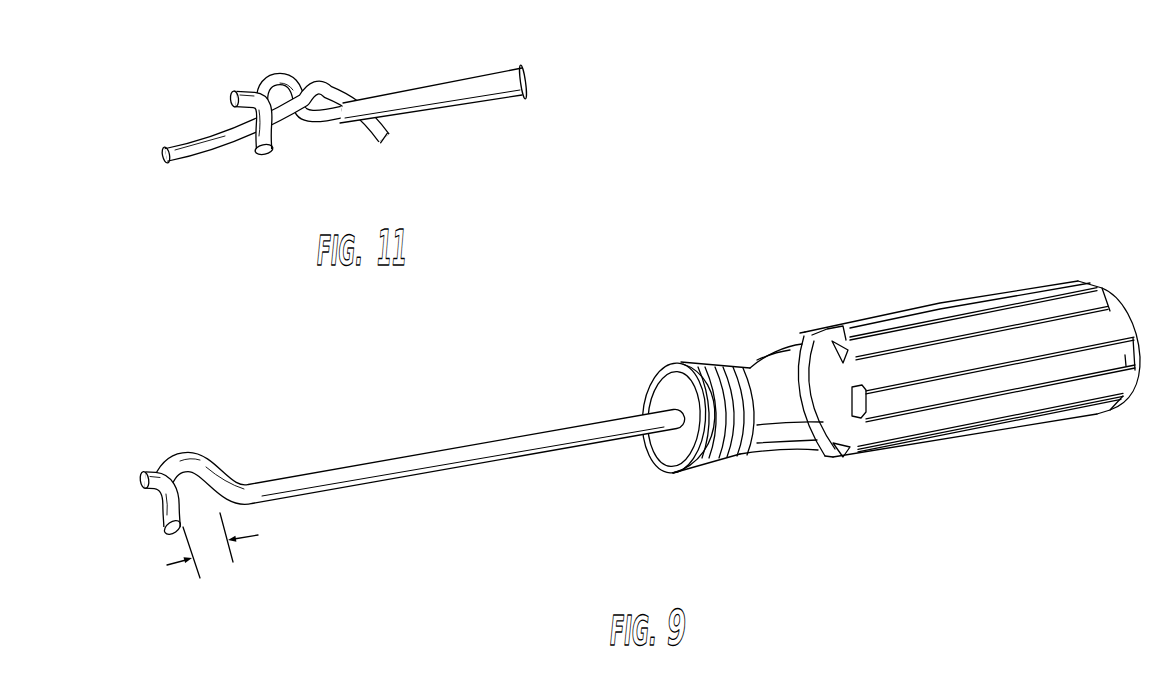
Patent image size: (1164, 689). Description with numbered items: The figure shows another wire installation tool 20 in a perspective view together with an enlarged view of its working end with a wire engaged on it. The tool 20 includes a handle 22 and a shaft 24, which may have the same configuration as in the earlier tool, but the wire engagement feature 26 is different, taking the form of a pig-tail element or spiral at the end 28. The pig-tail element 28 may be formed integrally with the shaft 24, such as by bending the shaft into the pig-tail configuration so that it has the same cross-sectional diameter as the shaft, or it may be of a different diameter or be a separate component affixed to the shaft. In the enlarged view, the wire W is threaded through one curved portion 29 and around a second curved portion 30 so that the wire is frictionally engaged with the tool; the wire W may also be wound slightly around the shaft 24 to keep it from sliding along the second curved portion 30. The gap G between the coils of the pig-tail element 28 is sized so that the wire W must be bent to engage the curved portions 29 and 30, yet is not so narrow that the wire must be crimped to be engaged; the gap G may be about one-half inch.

In FIG. 9, the wire installation tool 20 is at (614, 415).
In FIG. 9, the handle 22 is at (932, 448).
In FIG. 11, the shaft 24 is at (467, 88).
In FIG. 9, the shaft 24 is at (428, 458).
In FIG. 11, the wire engagement feature 26 is at (281, 96).
In FIG. 9, the wire engagement feature 26 is at (171, 500).
In FIG. 9, the pig-tail element 28 is at (139, 488).
In FIG. 11, the first curved portion 29 is at (276, 154).
In FIG. 9, the first curved portion 29 is at (168, 532).
In FIG. 11, the second curved portion 30 is at (285, 76).
In FIG. 9, the second curved portion 30 is at (181, 452).
In FIG. 11, the wire W is at (338, 86).
In FIG. 9, the gap G is at (212, 545).